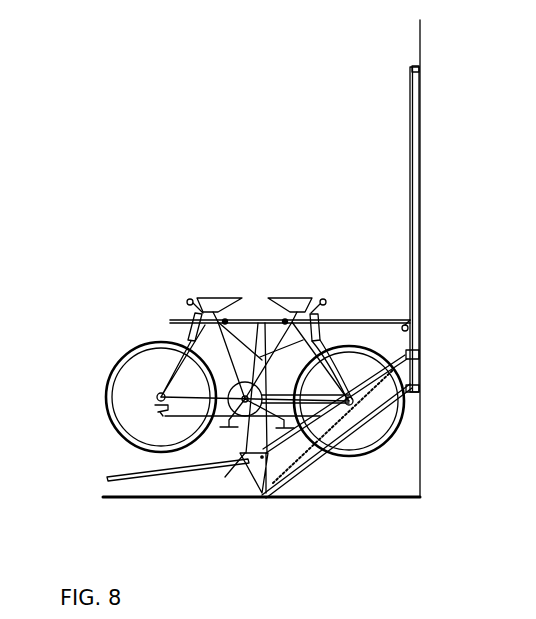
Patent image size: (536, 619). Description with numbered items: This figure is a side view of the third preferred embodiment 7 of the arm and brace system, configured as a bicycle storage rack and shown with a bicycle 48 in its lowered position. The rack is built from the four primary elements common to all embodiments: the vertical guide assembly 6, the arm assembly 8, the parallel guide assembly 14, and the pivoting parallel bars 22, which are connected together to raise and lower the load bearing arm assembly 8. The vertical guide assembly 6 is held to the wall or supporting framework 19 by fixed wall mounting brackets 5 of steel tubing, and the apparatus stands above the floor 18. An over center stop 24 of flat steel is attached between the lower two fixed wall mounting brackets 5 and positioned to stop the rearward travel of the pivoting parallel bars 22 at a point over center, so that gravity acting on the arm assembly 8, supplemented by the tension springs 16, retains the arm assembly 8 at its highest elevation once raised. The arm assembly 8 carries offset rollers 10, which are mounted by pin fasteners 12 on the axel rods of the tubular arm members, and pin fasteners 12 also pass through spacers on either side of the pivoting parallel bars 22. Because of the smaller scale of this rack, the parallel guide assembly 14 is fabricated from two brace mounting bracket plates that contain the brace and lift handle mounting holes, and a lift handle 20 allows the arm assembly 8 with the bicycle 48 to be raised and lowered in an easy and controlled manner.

The fixed wall mounting bracket 5 is at (419, 69).
The vertical guide assembly 6 is at (408, 200).
The third preferred embodiment 7 is at (172, 162).
The arm assembly 8 is at (348, 323).
The offset roller 10 is at (414, 320).
The pin fastener 12 is at (272, 360).
The parallel guide assembly 14 is at (245, 470).
The tension spring 16 is at (358, 432).
The floor 18 is at (365, 500).
The wall or supporting framework 19 is at (420, 125).
The lift handle 20 is at (125, 473).
The pivoting parallel bars 22 is at (222, 322).
The over center stop 24 is at (403, 352).
The bicycle 48 is at (132, 345).